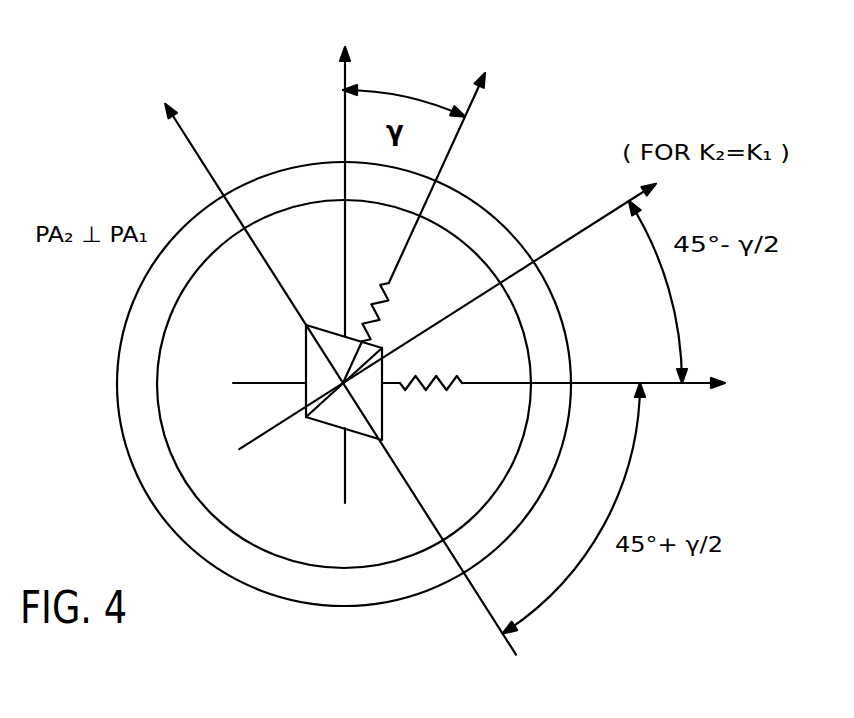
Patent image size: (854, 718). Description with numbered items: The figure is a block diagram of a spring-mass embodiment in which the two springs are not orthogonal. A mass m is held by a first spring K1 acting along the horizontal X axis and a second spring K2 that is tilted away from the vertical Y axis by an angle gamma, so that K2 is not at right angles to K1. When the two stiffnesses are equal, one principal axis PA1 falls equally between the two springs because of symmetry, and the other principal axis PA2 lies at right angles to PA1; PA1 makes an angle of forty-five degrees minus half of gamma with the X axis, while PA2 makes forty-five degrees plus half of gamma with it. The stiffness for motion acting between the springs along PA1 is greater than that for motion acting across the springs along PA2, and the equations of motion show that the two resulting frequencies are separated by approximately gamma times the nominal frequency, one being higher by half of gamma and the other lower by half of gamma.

The mass m is at (344, 382).
The first spring K1 is at (431, 408).
The second spring K2 is at (414, 228).
The first principal axis PA1 is at (473, 312).
The second principal axis PA2 is at (315, 373).
The X axis X is at (490, 385).
The Y axis Y is at (340, 263).